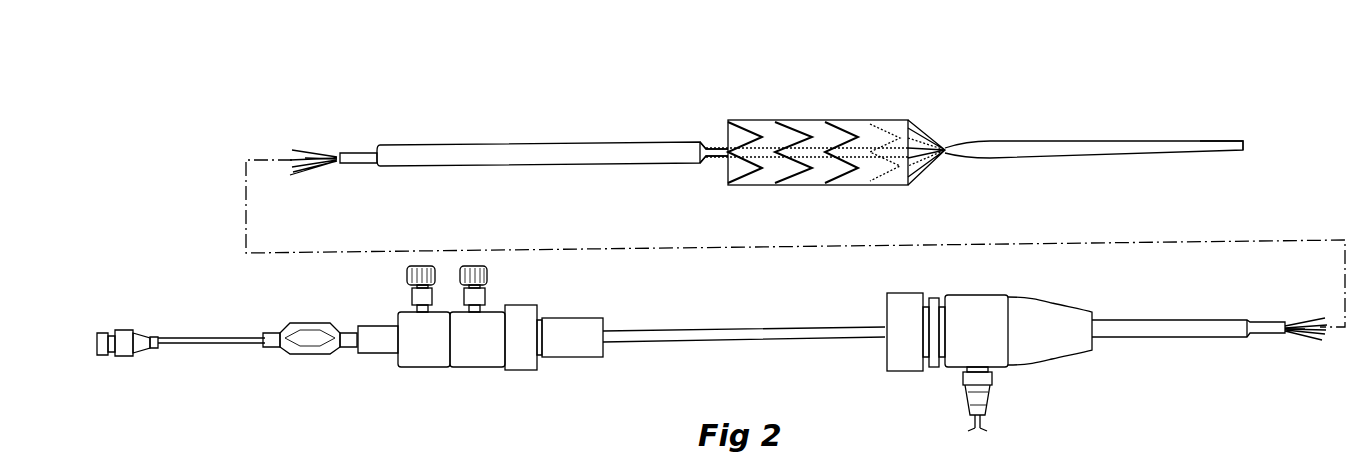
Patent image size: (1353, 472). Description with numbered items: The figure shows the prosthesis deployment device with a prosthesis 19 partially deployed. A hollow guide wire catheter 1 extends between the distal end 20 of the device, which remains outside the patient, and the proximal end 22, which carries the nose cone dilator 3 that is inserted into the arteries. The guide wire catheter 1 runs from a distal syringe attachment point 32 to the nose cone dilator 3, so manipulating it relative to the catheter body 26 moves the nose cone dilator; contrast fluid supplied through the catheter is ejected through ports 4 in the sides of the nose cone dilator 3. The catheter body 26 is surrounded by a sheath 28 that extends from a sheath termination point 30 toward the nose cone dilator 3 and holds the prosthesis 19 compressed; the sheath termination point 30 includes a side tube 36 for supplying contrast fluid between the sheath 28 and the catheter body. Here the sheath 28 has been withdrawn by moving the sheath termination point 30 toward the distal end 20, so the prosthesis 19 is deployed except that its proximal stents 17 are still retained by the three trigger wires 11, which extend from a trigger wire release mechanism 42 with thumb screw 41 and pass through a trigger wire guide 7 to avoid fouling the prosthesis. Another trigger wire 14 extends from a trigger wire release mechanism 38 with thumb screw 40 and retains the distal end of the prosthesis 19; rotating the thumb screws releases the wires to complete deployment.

The guide wire catheter 1 is at (225, 343).
The nose cone dilator 3 is at (1127, 145).
The ports 4 is at (1010, 148).
The trigger wire guide 7 is at (922, 160).
The trigger wires 11 is at (312, 165).
The trigger wire 14 is at (308, 152).
The stents 17 is at (928, 137).
The prosthesis 19 is at (852, 133).
The distal end 20 is at (181, 362).
The proximal end 22 is at (1225, 160).
The catheter body 26 is at (705, 157).
The sheath 28 is at (609, 155).
The sheath termination point 30 is at (1062, 340).
The syringe attachment point 32 is at (122, 341).
The side tube 36 is at (970, 393).
The trigger wire release mechanism 38 is at (483, 355).
The thumb screw 40 is at (487, 278).
The thumb screw 41 is at (407, 277).
The trigger wire release mechanism 42 is at (430, 340).